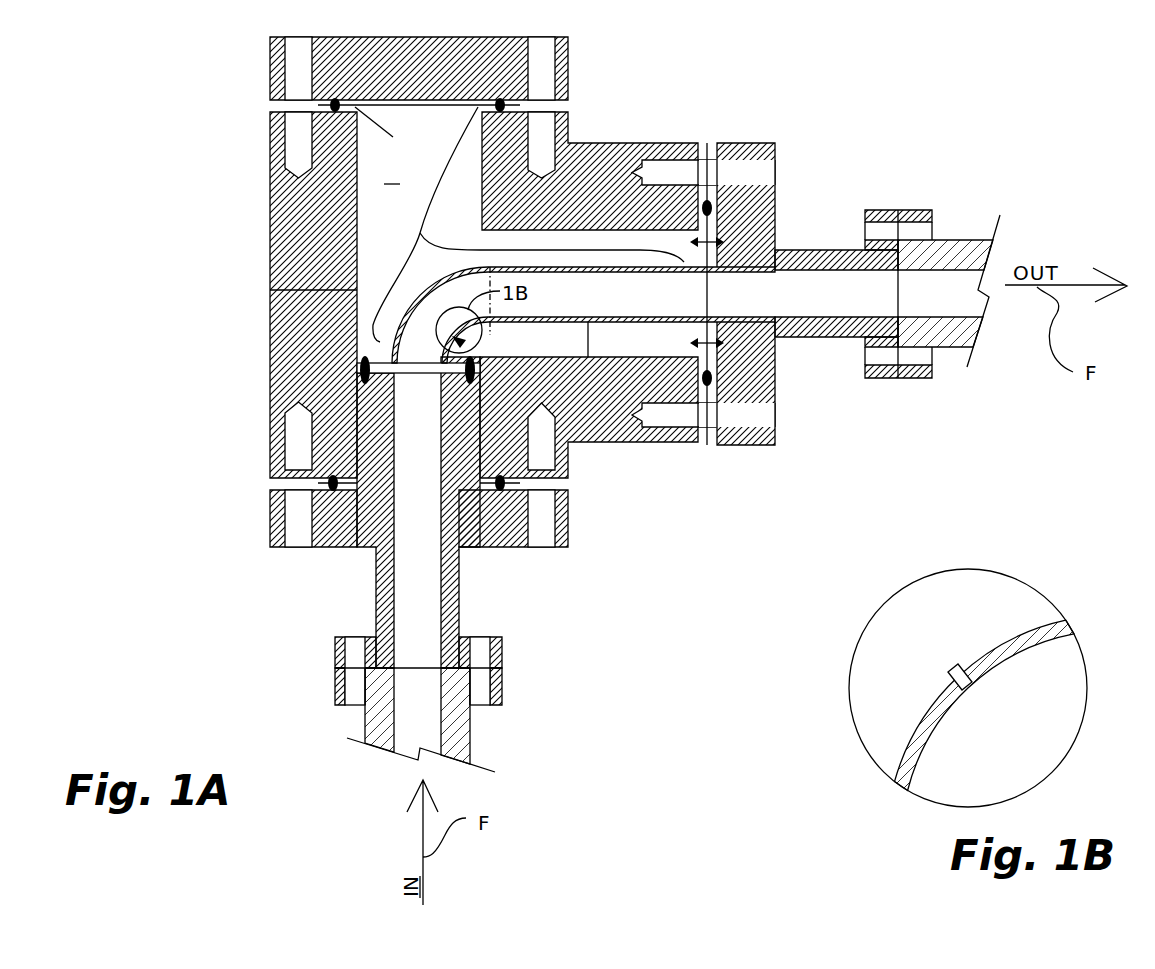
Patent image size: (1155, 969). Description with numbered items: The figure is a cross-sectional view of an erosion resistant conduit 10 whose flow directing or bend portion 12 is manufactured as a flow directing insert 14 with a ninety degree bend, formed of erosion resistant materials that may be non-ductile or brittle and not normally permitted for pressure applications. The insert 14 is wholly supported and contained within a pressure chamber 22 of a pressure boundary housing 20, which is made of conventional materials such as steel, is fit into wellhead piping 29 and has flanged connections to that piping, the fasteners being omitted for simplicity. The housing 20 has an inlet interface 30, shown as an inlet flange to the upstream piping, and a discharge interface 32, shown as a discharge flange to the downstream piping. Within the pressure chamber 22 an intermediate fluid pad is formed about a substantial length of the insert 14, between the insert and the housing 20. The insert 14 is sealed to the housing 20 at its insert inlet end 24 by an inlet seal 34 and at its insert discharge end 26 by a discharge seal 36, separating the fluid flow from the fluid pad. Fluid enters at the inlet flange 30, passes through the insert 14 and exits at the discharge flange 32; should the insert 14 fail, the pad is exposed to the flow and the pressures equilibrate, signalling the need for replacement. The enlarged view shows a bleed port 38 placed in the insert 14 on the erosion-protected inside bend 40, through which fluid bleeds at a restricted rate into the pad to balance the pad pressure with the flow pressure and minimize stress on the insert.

In FIG. 1A, the erosion resistant conduit 10 is at (588, 324).
In FIG. 1B, the erosion resistant conduit 10 is at (945, 692).
In FIG. 1A, the bend portion 12 is at (412, 303).
In FIG. 1A, the flow directing insert 14 is at (482, 103).
In FIG. 1A, the pressure boundary housing 20 is at (523, 548).
In FIG. 1A, the pressure chamber 22 is at (333, 102).
In FIG. 1A, the insert inlet end 24 is at (362, 355).
In FIG. 1A, the insert discharge end 26 is at (708, 203).
In FIG. 1A, the wellhead piping 29 is at (957, 350).
In FIG. 1A, the inlet interface 30 is at (372, 672).
In FIG. 1A, the discharge interface 32 is at (930, 240).
In FIG. 1A, the inlet seal 34 is at (335, 425).
In FIG. 1A, the discharge seal 36 is at (692, 242).
In FIG. 1A, the bleed port 38 is at (462, 343).
In FIG. 1B, the bleed port 38 is at (962, 690).
In FIG. 1A, the inside bend 40 is at (472, 358).